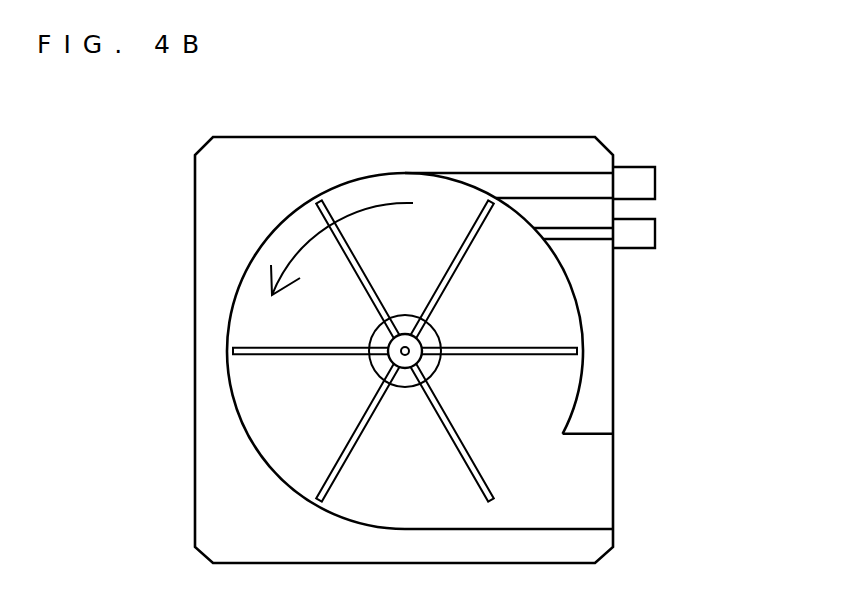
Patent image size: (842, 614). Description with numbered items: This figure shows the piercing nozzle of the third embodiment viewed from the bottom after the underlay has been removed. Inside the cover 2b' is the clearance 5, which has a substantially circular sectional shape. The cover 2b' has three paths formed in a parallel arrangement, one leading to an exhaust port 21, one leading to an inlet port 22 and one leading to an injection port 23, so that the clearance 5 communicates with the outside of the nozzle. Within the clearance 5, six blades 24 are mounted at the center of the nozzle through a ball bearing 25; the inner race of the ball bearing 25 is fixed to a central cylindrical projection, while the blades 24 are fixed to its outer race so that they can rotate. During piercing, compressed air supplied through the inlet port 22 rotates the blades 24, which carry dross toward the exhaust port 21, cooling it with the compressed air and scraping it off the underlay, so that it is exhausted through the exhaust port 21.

The cover 2b' is at (404, 314).
The clearance 5 is at (445, 200).
The exhaust port 21 is at (587, 485).
The inlet port 22 is at (585, 183).
The injection port 23 is at (585, 235).
The blades 24 is at (343, 453).
The ball bearing 25 is at (430, 338).